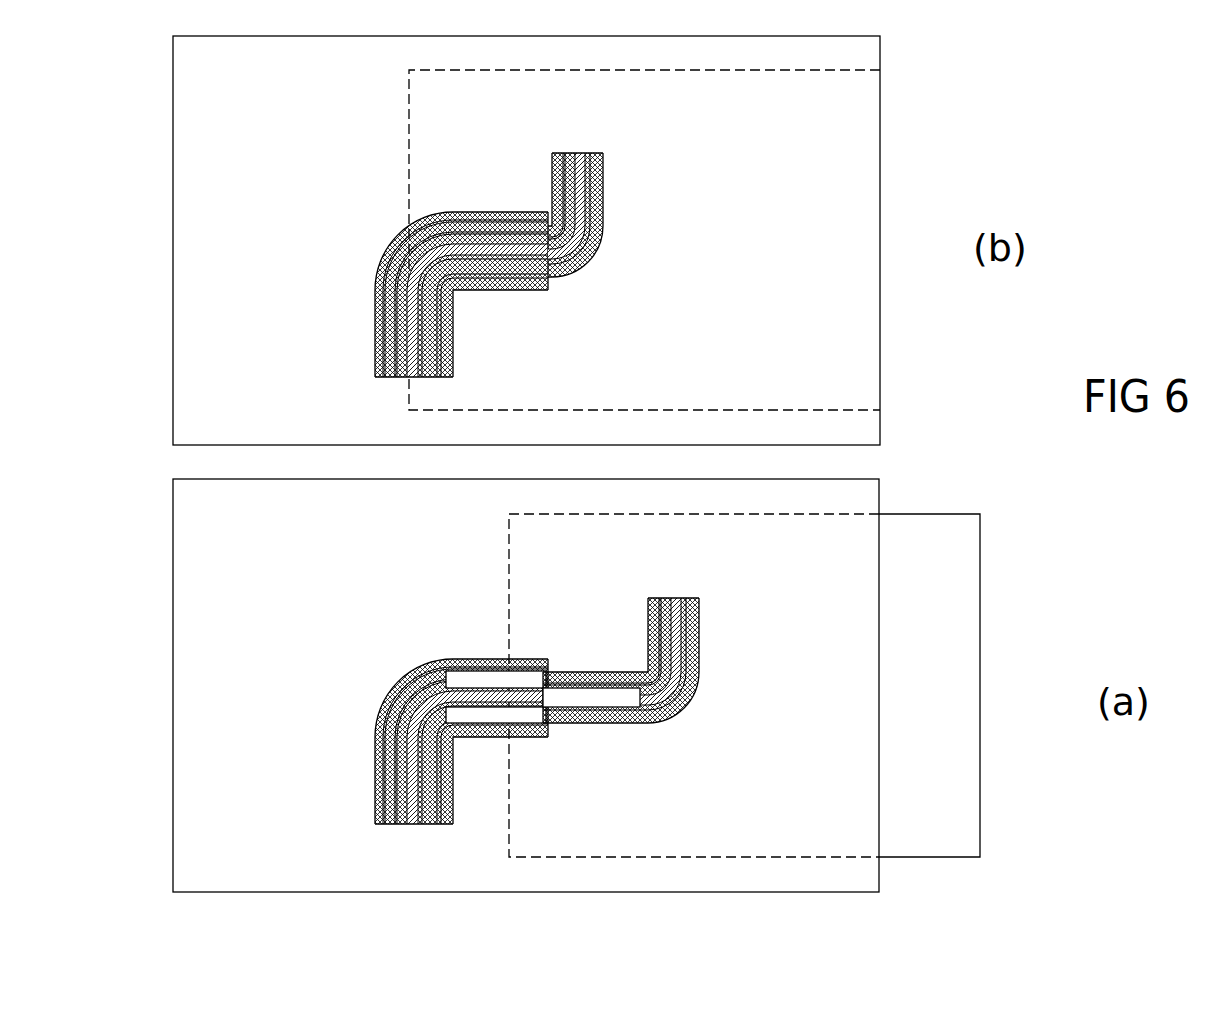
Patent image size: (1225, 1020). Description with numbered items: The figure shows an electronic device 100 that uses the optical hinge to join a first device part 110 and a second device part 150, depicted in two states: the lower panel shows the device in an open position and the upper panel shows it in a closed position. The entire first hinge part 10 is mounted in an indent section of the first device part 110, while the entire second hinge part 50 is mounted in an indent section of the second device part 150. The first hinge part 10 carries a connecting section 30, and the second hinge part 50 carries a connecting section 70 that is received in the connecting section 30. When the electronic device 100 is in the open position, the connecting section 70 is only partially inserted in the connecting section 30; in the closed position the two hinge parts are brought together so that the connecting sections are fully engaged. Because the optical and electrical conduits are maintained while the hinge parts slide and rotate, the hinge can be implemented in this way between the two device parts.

The first hinge part 10 is at (372, 240).
The connecting section 30 is at (530, 744).
The second hinge part 50 is at (612, 203).
The connecting section 70 is at (582, 668).
The electronic device 100 is at (903, 170).
The first device part 110 is at (177, 259).
The second device part 150 is at (420, 140).